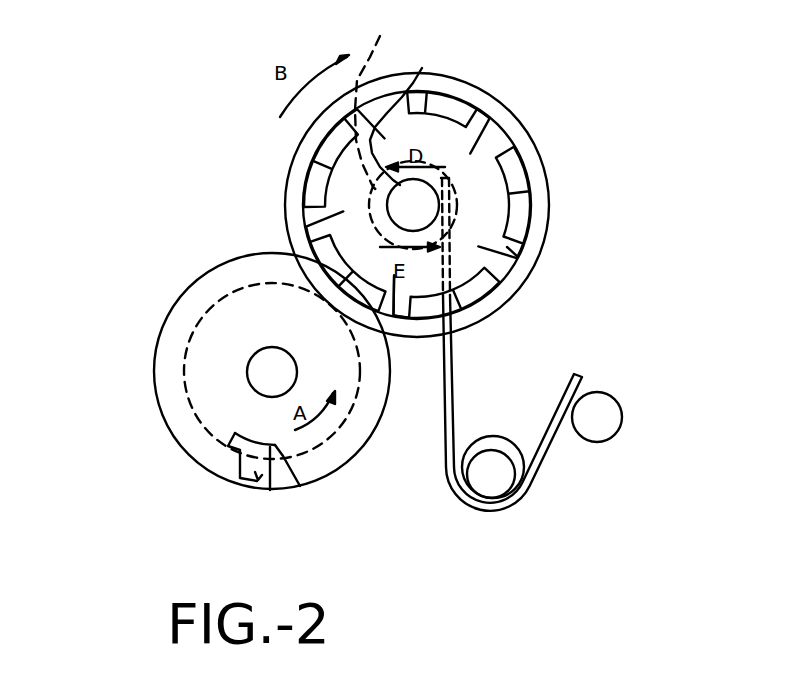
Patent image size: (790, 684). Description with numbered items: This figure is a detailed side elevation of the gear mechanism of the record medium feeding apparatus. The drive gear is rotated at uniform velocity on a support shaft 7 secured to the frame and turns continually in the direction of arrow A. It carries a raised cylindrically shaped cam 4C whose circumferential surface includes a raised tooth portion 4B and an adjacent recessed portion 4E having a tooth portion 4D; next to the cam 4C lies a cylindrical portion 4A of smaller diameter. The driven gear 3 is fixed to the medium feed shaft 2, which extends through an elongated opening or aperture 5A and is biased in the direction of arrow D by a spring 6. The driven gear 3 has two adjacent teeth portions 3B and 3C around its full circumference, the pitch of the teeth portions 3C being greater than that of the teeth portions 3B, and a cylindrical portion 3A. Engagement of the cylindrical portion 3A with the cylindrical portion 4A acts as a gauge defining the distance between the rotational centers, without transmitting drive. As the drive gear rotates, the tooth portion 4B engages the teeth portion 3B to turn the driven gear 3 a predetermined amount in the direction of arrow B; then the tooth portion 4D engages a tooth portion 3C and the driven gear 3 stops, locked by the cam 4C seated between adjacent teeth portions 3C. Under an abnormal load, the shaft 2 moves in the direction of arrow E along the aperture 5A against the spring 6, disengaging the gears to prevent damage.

The medium feed shaft 2 is at (397, 116).
The driven gear 3 is at (513, 133).
The cylindrical portion of driven gear 3A is at (473, 83).
The teeth portion 3B is at (510, 247).
The teeth portion 3C is at (458, 290).
The cylindrical portion of drive gear 4A is at (193, 327).
The raised tooth portion 4B is at (262, 482).
The cylindrically shaped cam 4C is at (202, 270).
The tooth portion 4D is at (215, 457).
The recessed portion 4E is at (275, 468).
The elongated opening or aperture 5A is at (376, 104).
The spring 6 is at (455, 398).
The support shaft 7 is at (270, 372).